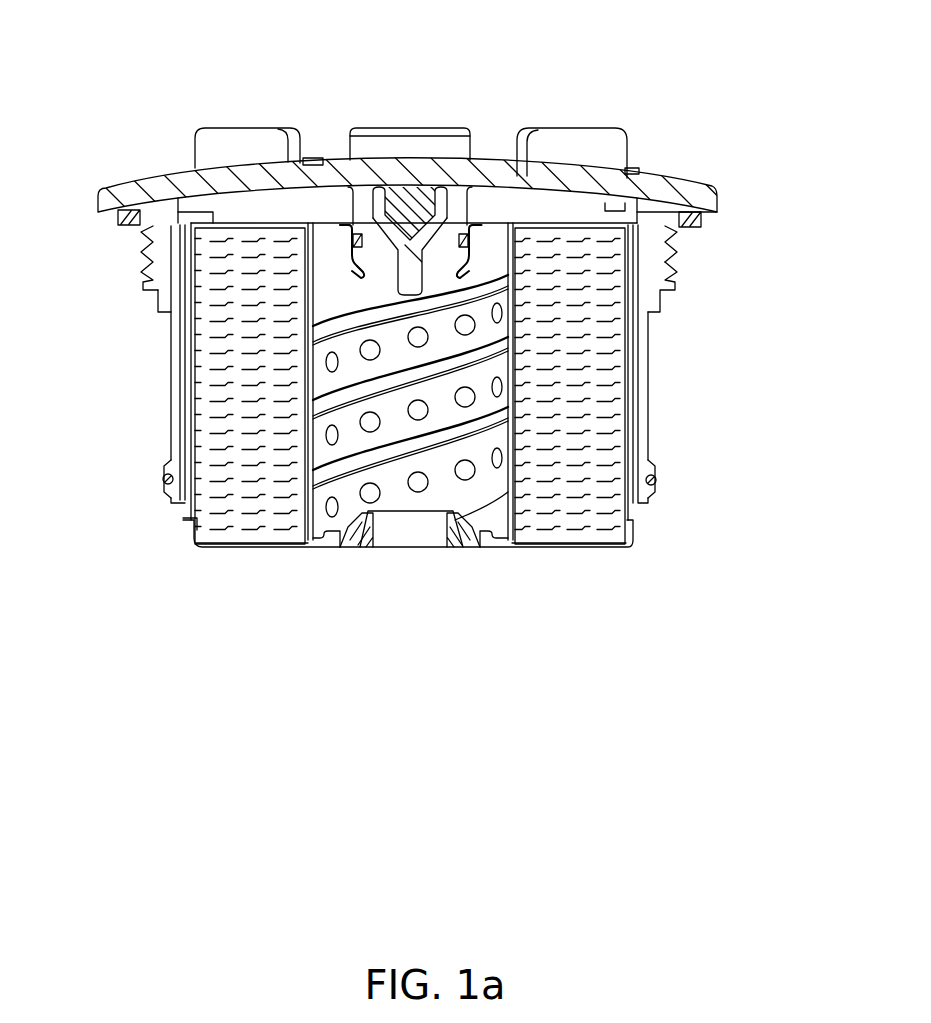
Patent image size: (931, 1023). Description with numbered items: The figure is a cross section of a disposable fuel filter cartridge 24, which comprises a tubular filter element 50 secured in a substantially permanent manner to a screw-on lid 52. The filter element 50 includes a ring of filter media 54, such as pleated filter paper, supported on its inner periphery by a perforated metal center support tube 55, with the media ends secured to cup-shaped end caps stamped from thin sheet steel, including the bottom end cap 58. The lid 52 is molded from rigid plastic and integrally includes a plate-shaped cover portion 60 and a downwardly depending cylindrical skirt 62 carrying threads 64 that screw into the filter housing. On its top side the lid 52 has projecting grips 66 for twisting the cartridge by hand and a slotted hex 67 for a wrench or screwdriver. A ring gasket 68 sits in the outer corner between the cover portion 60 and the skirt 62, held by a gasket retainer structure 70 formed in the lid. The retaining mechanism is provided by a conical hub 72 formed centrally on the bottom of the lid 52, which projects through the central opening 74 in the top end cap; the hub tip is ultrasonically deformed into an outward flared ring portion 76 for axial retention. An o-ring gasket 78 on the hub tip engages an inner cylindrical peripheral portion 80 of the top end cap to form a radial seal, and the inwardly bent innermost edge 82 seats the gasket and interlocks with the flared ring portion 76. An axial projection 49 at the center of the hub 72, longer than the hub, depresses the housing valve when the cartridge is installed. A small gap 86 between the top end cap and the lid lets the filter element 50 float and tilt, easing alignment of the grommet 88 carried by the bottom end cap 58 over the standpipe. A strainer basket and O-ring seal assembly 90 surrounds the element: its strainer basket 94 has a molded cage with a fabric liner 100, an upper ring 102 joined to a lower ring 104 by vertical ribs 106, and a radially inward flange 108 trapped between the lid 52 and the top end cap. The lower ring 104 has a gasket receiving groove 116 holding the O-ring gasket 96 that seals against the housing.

The filter cartridge 24 is at (326, 88).
The axial projection 49 is at (410, 274).
The filter element 50 is at (165, 535).
The lid 52 is at (668, 150).
The filter media 54 is at (240, 452).
The center support tube 55 is at (318, 356).
The bottom end cap 58 is at (236, 548).
The cover portion 60 is at (487, 178).
The skirt 62 is at (674, 245).
The threads 64 is at (674, 268).
The grips 66 is at (250, 145).
The slotted hex 67 is at (392, 128).
The ring gasket 68 is at (120, 222).
The gasket retainer structure 70 is at (143, 212).
The hub 72 is at (470, 178).
The central opening 74 is at (438, 272).
The flared ring portion 76 is at (478, 292).
The o-ring gasket 78 is at (478, 246).
The inner cylindrical peripheral portion 80 is at (475, 230).
The innermost edge 82 is at (468, 248).
The gap 86 is at (650, 192).
The grommet 88 is at (455, 547).
The strainer basket and O-ring seal assembly 90 is at (662, 477).
The strainer basket 94 is at (158, 375).
The O-ring gasket 96 is at (164, 479).
The fabric liner 100 is at (178, 405).
The upper ring 102 is at (150, 262).
The lower ring 104 is at (173, 503).
The vertical ribs 106 is at (170, 312).
The flange 108 is at (200, 217).
The gasket receiving groove 116 is at (178, 480).